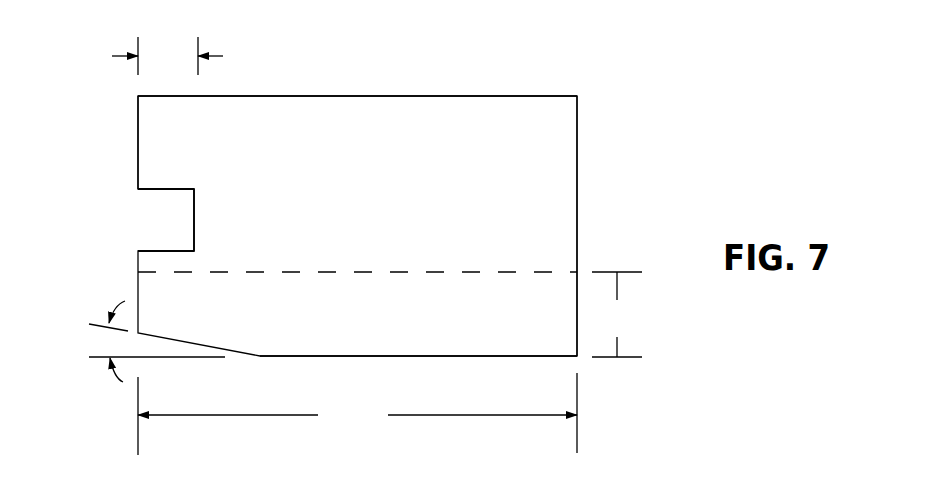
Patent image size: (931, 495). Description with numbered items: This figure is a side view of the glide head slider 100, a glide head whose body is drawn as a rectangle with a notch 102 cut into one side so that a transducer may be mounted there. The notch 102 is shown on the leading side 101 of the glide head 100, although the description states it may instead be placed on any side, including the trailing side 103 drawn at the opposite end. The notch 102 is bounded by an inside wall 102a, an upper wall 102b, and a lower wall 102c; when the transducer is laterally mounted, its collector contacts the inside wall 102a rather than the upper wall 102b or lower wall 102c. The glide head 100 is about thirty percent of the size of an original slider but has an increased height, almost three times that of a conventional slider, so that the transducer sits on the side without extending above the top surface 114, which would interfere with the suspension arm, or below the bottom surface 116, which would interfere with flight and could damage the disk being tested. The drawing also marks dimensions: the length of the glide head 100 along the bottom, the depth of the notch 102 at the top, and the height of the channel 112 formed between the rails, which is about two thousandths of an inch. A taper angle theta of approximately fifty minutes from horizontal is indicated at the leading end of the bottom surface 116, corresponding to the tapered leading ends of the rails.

The glide head slider 100 is at (478, 59).
The leading side 101 is at (138, 143).
The notch 102 is at (167, 144).
The inside wall 102a is at (194, 218).
The upper wall 102b is at (160, 189).
The lower wall 102c is at (160, 251).
The trailing side 103 is at (578, 183).
The channel 112 is at (616, 314).
The top surface 114 is at (352, 96).
The bottom surface 116 is at (427, 357).